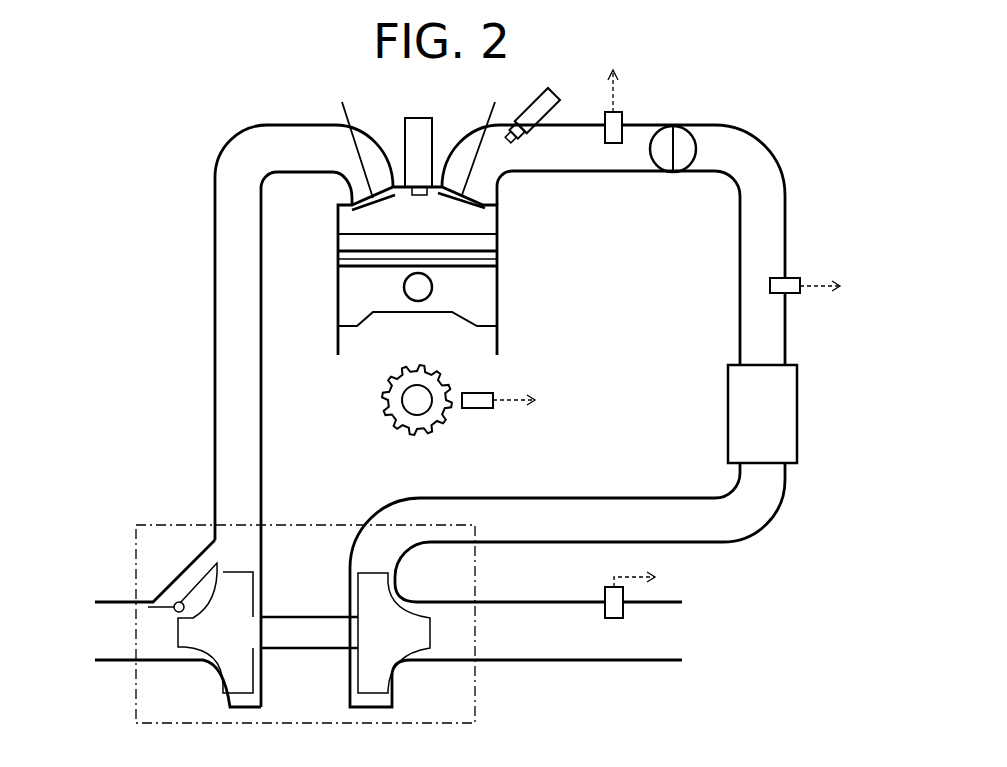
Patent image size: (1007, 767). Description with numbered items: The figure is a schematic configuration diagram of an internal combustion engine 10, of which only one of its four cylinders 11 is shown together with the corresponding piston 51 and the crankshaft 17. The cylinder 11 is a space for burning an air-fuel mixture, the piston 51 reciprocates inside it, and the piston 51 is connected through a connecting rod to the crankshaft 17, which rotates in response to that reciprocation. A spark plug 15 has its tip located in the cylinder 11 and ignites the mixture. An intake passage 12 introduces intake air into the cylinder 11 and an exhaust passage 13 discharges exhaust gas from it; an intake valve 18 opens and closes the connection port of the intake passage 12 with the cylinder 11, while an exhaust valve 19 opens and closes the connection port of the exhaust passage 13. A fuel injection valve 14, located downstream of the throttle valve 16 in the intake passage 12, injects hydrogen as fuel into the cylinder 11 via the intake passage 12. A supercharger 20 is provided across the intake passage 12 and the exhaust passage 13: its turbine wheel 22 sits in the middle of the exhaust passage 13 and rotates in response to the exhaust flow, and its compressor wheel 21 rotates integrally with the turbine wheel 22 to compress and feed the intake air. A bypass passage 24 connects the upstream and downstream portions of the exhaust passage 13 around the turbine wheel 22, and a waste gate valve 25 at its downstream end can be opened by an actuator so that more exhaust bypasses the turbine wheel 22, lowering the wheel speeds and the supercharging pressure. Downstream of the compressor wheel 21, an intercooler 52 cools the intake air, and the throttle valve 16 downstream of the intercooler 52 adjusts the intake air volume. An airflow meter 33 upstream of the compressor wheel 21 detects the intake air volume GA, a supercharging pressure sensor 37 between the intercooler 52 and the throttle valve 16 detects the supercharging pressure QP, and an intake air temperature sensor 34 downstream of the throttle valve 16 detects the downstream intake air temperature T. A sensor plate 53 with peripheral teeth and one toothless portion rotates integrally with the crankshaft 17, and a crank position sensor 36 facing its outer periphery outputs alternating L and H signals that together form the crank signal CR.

The internal combustion engine 10 is at (186, 125).
The cylinder 11 is at (461, 224).
The intake passage 12 is at (738, 298).
The exhaust passage 13 is at (263, 345).
The fuel injection valve 14 is at (517, 108).
The spark plug 15 is at (432, 128).
The throttle valve 16 is at (696, 149).
The crankshaft 17 is at (405, 412).
The intake valve 18 is at (477, 167).
The exhaust valve 19 is at (342, 105).
The supercharger 20 is at (475, 697).
The compressor wheel 21 is at (398, 677).
The turbine wheel 22 is at (210, 677).
The bypass passage 24 is at (173, 582).
The waste gate valve 25 is at (165, 610).
The airflow meter 33 is at (603, 607).
The intake air temperature sensor 34 is at (603, 135).
The crank position sensor 36 is at (478, 410).
The supercharging pressure sensor 37 is at (790, 296).
The piston 51 is at (452, 313).
The intercooler 52 is at (727, 415).
The sensor plate 53 is at (400, 372).